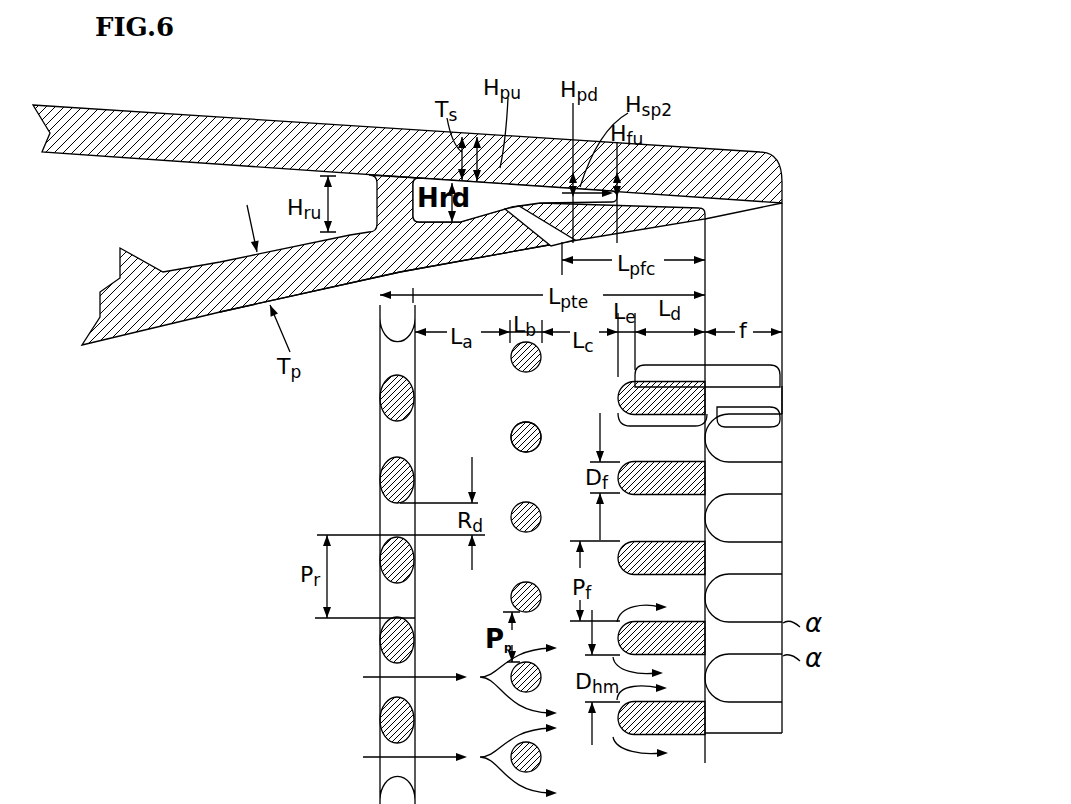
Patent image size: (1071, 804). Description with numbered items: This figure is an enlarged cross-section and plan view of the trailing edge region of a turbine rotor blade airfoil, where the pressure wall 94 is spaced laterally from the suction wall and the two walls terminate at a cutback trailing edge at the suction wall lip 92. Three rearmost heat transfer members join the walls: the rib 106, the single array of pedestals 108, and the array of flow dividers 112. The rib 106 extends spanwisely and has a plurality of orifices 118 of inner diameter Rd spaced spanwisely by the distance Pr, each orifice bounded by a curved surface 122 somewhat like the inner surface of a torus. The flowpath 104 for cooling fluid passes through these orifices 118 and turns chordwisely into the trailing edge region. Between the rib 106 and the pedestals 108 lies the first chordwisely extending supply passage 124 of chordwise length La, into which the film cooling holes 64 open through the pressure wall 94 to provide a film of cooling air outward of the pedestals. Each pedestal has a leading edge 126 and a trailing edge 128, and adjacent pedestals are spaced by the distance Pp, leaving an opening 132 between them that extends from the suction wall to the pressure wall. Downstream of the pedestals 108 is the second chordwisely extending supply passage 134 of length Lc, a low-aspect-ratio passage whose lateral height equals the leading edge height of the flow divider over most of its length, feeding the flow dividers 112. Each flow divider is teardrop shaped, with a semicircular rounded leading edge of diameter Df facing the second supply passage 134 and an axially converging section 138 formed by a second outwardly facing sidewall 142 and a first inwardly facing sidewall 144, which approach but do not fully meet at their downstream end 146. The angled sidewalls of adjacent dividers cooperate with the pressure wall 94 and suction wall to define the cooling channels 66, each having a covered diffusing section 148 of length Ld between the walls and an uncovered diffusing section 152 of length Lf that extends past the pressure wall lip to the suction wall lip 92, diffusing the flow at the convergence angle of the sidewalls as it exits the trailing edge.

The film cooling holes 64 is at (546, 245).
The cooling channels 66 is at (651, 680).
The suction wall lip 92 is at (783, 292).
The pressure wall 94 is at (200, 323).
The flowpath for cooling fluid 104 is at (392, 677).
The rib 106 is at (380, 280).
The pedestals 108 is at (524, 192).
The flow dividers 112 is at (667, 197).
The orifices 118 is at (393, 440).
The curved surface 122 is at (395, 375).
The first chordwisely extending supply passage 124 is at (477, 611).
The leading edge of pedestal 126 is at (512, 433).
The trailing edge of pedestal 128 is at (542, 435).
The opening 132 is at (547, 573).
The second chordwisely extending supply passage 134 is at (595, 778).
The axially converging section 138 is at (715, 364).
The second outwardly facing sidewall 142 is at (700, 540).
The first inwardly facing sidewall 144 is at (700, 578).
The downstream end 146 is at (783, 397).
The covered diffusing section 148 is at (657, 428).
The uncovered diffusing section 152 is at (747, 427).